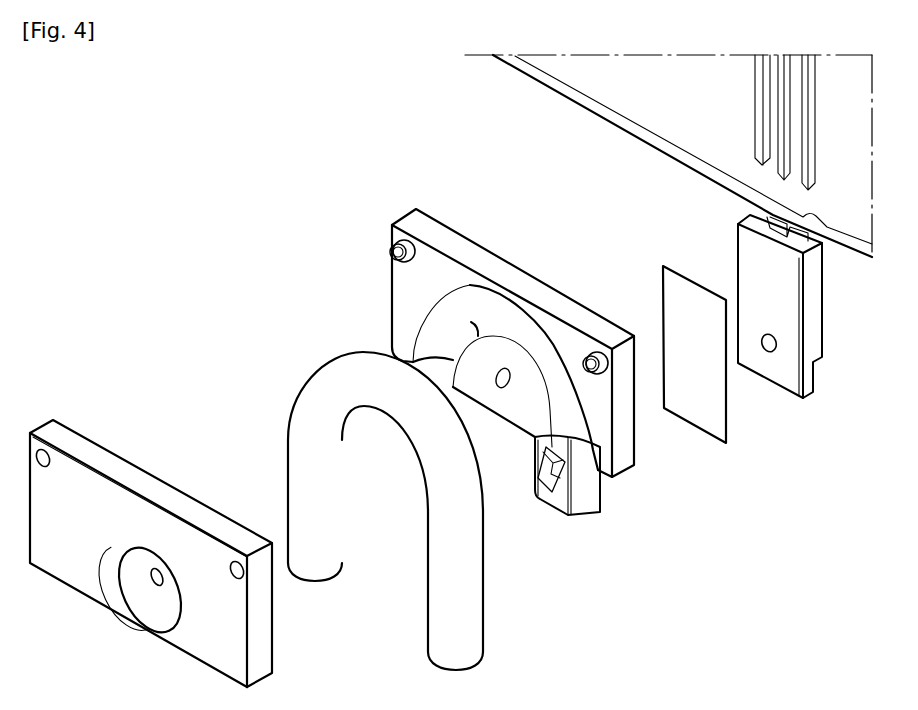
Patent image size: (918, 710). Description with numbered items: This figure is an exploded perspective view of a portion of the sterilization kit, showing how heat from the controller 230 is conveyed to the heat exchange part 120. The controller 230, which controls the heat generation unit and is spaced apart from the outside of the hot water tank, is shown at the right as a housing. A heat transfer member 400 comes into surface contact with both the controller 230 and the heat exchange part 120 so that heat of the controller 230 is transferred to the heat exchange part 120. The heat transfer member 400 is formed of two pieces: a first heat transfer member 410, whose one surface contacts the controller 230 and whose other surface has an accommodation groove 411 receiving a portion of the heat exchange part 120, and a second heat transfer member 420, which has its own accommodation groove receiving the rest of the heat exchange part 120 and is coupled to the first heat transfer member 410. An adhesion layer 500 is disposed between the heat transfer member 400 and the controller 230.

The heat exchange part 120 is at (467, 553).
The controller 230 is at (748, 253).
The heat transfer member 400 is at (218, 283).
The first heat transfer member 410 is at (422, 348).
The semicircular pipe support portion 411 is at (518, 323).
The second heat transfer member 420 is at (116, 463).
The adhesion layer 500 is at (693, 412).